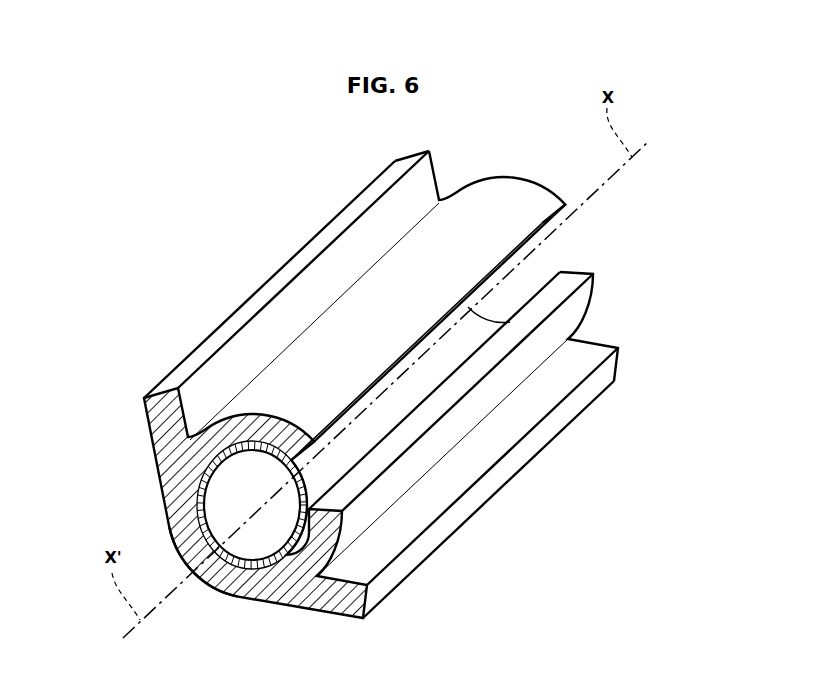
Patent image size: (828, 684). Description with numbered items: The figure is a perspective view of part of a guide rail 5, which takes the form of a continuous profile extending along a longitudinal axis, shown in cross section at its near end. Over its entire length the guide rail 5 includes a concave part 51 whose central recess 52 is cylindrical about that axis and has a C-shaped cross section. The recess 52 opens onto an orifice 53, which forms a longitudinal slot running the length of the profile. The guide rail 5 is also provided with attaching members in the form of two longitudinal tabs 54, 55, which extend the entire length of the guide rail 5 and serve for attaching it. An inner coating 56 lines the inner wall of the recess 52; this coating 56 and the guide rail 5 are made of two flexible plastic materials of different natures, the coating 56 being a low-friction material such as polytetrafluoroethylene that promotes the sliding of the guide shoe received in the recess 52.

The guide rail 5 is at (381, 407).
The concave part 51 is at (198, 598).
The central recess 52 is at (252, 505).
The orifice 53 is at (547, 262).
The longitudinal tab 54 is at (248, 312).
The longitudinal tab 55 is at (455, 526).
The inner coating 56 is at (283, 554).